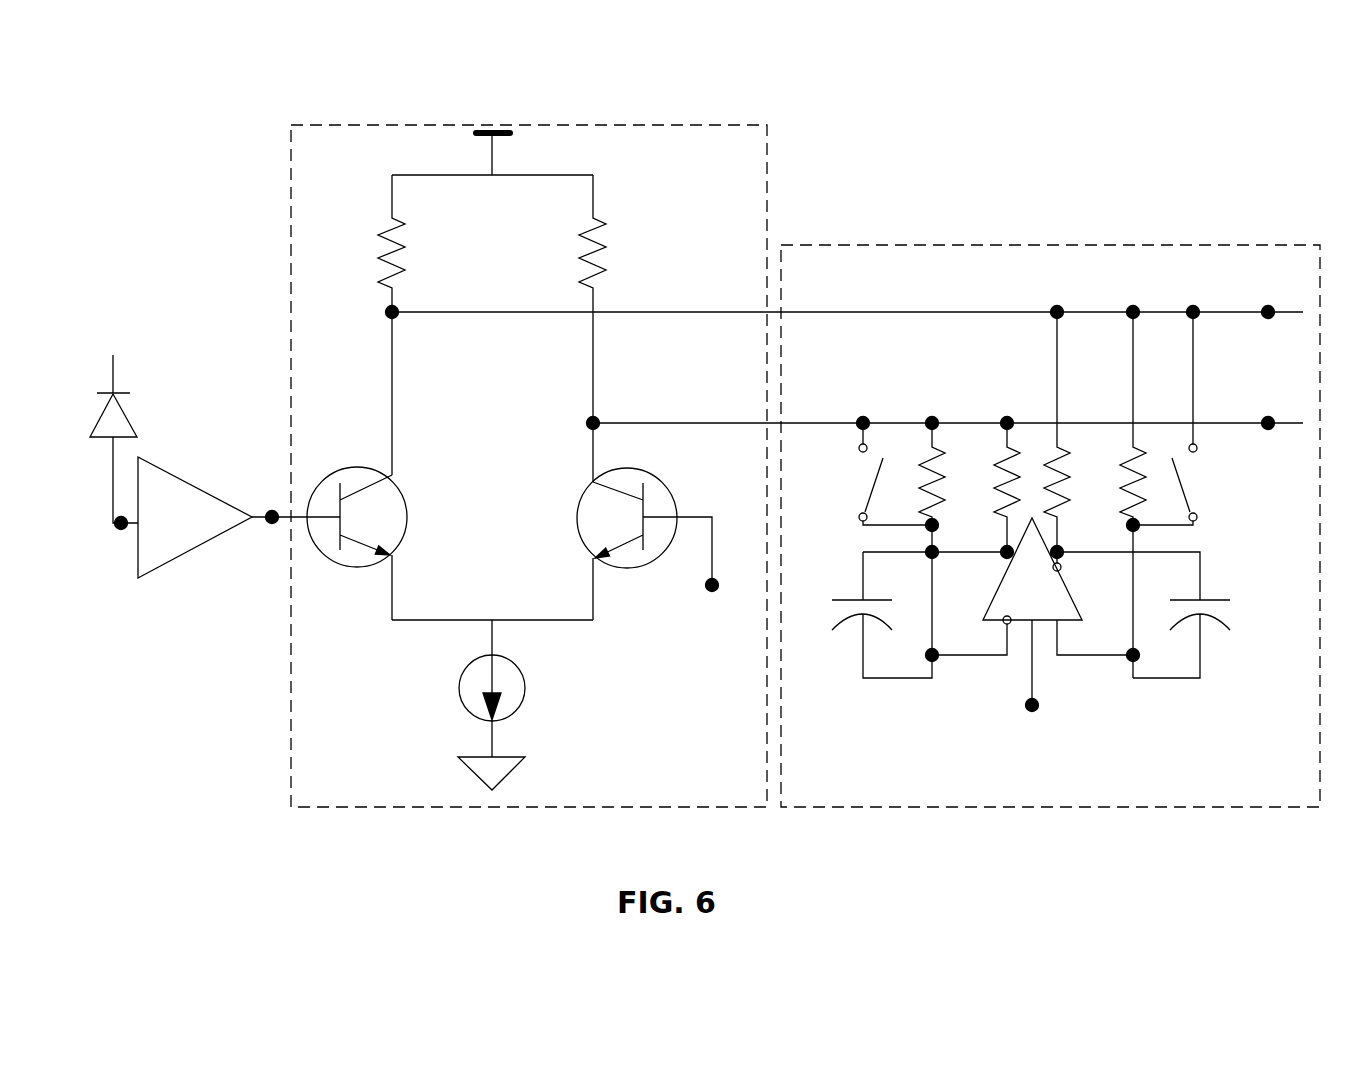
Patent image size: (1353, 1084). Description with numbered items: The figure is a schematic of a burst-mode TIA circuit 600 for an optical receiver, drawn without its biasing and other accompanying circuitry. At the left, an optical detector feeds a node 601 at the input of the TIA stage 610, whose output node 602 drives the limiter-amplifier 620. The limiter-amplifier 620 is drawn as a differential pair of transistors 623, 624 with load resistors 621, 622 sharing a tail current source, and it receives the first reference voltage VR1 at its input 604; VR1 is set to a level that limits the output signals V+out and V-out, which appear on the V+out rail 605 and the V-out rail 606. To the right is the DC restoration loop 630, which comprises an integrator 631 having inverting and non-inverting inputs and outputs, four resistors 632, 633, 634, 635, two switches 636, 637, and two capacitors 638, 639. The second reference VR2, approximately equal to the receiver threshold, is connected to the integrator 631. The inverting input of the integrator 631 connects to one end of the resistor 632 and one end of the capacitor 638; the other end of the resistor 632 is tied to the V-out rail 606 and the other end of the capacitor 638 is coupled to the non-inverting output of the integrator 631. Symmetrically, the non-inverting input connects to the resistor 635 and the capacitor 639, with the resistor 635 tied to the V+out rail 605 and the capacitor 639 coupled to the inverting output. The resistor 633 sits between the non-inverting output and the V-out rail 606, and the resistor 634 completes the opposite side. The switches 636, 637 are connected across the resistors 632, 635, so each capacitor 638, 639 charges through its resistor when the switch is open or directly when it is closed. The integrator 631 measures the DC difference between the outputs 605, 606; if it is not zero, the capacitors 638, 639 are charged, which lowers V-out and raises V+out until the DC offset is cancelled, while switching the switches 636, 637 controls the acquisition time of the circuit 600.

The burst-mode TIA circuit 600 is at (705, 459).
The photodiode input node 601 is at (114, 459).
The TIA output node 602 is at (295, 499).
The input of the limiter-amplifier 604 is at (686, 581).
The V+out rail 605 is at (845, 295).
The V-out rail 606 is at (945, 409).
The TIA stage 610 is at (168, 468).
The limiter-amplifier 620 is at (765, 192).
The load resistor 621 is at (402, 221).
The load resistor 622 is at (603, 221).
The transistor 623 is at (403, 483).
The transistor 624 is at (580, 500).
The DC restoration loop 630 is at (982, 245).
The integrator 631 is at (982, 612).
The resistor 632 is at (938, 475).
The resistor 633 is at (996, 497).
The resistor 634 is at (1062, 475).
The resistor 635 is at (1116, 497).
The switch 636 is at (837, 481).
The switch 637 is at (1216, 470).
The capacitor 638 is at (852, 596).
The capacitor 639 is at (1218, 597).